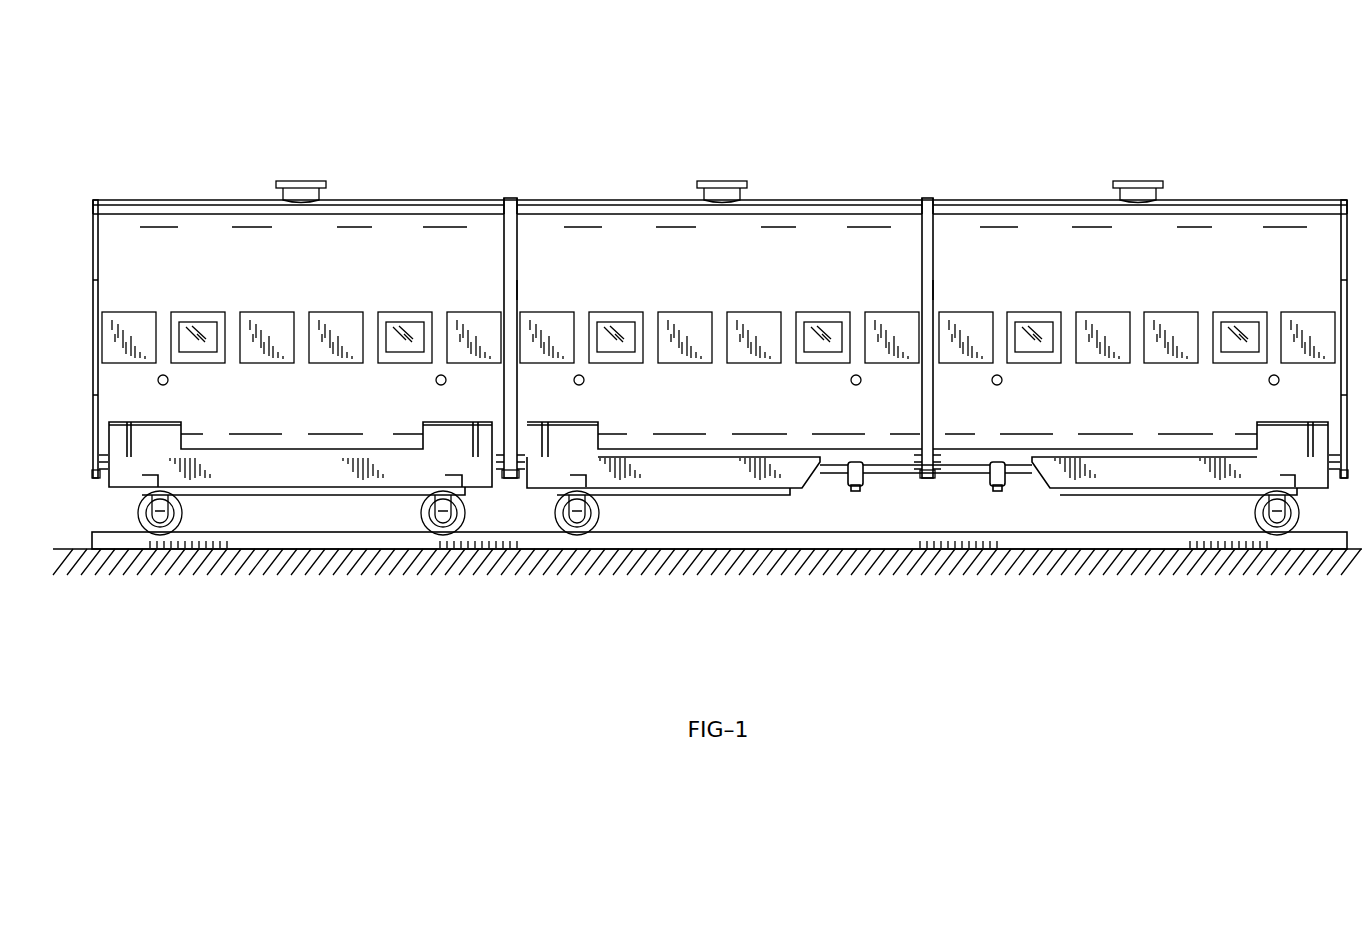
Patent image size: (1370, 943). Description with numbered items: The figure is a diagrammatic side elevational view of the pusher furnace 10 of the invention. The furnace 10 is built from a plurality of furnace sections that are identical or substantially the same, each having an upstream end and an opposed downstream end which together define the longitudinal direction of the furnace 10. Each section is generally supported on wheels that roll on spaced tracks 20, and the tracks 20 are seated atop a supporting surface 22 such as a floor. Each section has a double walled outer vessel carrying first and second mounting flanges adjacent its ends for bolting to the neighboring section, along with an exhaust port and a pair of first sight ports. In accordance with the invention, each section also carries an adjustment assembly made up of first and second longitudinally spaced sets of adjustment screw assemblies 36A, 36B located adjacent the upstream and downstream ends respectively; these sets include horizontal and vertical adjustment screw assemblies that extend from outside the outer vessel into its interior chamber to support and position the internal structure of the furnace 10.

The pusher furnace 10 is at (952, 80).
The tracks 20 is at (305, 542).
The supporting surface 22 is at (1090, 547).
The first set of adjustment screw assemblies 36A is at (965, 495).
The second set of adjustment screw assemblies 36B is at (822, 495).